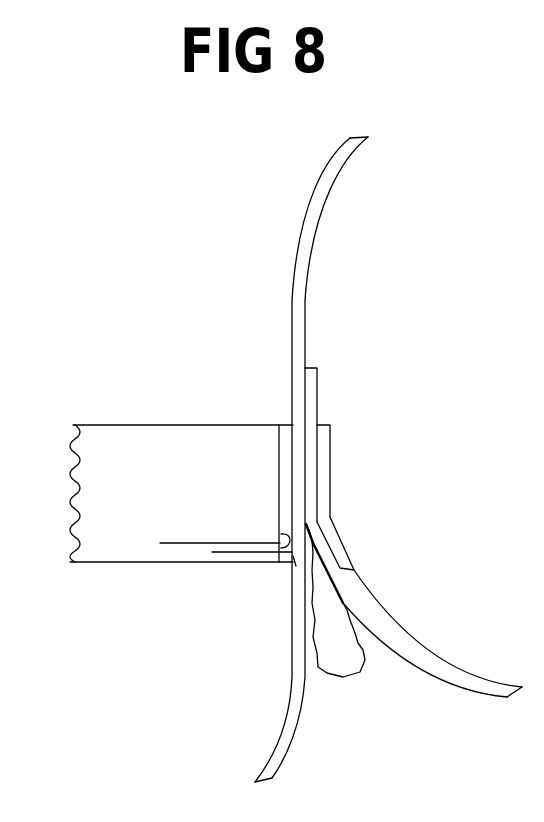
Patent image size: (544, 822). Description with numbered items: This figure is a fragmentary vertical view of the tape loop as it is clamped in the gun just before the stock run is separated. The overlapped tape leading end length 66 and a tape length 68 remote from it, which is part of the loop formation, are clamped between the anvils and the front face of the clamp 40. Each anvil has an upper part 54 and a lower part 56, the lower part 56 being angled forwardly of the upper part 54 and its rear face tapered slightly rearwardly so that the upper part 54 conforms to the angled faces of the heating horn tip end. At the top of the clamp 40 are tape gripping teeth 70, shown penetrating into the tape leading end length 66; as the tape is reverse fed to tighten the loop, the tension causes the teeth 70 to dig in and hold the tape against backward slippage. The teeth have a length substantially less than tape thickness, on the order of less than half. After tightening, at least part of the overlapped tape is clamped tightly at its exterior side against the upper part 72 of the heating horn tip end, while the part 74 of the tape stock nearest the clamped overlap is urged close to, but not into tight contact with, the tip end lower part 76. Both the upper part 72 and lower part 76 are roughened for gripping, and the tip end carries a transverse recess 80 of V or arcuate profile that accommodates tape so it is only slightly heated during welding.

The clamp 40 is at (311, 459).
The upper part of anvil 54 is at (325, 458).
The lower part of anvil 56 is at (353, 558).
The tape leading end length 66 is at (312, 373).
The tape length 68 is at (297, 448).
The tape gripping teeth 70 is at (310, 549).
The upper part of heating horn tip end 72 is at (280, 475).
The part of tape stock 74 is at (297, 553).
The lower part of heating horn tip end 76 is at (212, 552).
The transverse recess 80 is at (160, 543).